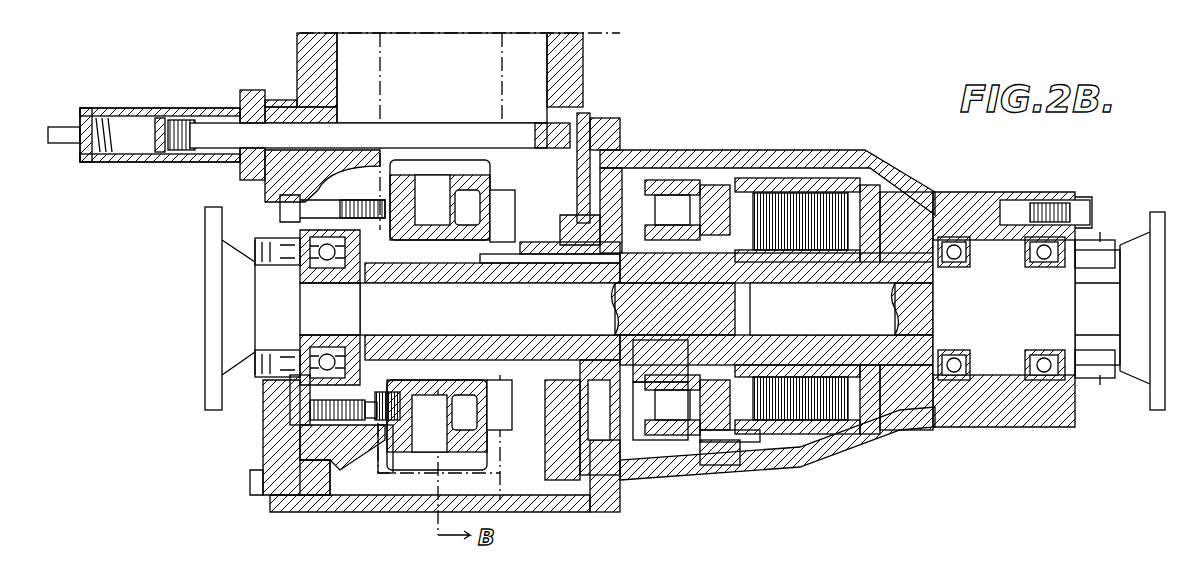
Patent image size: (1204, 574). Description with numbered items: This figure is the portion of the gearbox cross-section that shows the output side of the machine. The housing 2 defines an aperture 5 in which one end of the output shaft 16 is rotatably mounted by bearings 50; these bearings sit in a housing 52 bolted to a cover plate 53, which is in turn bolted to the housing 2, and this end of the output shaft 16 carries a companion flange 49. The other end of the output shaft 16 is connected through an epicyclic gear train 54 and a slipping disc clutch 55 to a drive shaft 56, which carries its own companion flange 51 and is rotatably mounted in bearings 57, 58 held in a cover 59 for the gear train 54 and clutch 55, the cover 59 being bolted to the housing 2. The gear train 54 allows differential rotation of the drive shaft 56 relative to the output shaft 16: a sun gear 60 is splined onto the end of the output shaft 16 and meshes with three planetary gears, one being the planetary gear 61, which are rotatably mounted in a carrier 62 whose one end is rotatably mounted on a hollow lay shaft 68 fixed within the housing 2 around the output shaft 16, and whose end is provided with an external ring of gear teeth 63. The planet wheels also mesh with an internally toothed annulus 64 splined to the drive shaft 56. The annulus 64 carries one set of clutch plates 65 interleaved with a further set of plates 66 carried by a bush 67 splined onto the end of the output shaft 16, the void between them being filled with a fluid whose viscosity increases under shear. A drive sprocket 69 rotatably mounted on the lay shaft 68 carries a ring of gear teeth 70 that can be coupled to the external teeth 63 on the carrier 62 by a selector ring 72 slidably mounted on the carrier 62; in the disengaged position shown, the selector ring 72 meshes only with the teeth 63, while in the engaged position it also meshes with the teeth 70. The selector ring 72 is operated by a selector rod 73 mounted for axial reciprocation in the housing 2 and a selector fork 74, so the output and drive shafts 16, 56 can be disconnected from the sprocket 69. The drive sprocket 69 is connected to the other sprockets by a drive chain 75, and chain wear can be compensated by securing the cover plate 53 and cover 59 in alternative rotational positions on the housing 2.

The housing 2 is at (526, 505).
The aperture 5 is at (350, 485).
The output shaft 16 is at (526, 317).
The companion flange 49 is at (205, 303).
The bearings 50 is at (300, 352).
The companion flange 51 is at (1170, 300).
The housing 52 is at (300, 408).
The cover plate 53 is at (270, 482).
The epicyclic gear train 54 is at (690, 448).
The slipping disc clutch 55 is at (748, 450).
The drive shaft 56 is at (866, 317).
The bearing 57 is at (985, 420).
The bearing 58 is at (1055, 385).
The cover 59 is at (890, 432).
The sun gear 60 is at (660, 365).
The planetary gear 61 is at (668, 190).
The carrier 62 is at (590, 246).
The external ring of gear teeth 63 is at (525, 258).
The internally toothed annulus 64 is at (690, 185).
The set of clutch plates 65 is at (800, 200).
The set of plates 66 is at (802, 433).
The bush 67 is at (870, 405).
The hollow lay shaft 68 is at (378, 205).
The drive sprocket 69 is at (430, 178).
The ring of gear teeth 70 is at (500, 235).
The selector ring 72 is at (572, 218).
The selector rod 73 is at (480, 130).
The selector fork 74 is at (588, 148).
The drive chain 75 is at (396, 490).